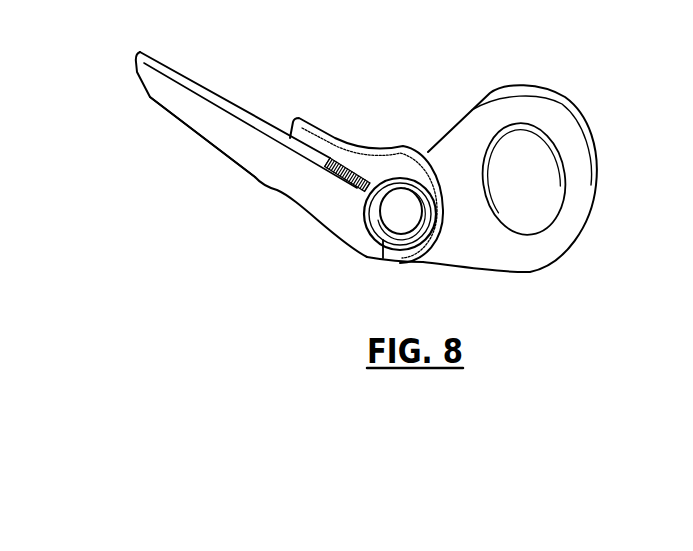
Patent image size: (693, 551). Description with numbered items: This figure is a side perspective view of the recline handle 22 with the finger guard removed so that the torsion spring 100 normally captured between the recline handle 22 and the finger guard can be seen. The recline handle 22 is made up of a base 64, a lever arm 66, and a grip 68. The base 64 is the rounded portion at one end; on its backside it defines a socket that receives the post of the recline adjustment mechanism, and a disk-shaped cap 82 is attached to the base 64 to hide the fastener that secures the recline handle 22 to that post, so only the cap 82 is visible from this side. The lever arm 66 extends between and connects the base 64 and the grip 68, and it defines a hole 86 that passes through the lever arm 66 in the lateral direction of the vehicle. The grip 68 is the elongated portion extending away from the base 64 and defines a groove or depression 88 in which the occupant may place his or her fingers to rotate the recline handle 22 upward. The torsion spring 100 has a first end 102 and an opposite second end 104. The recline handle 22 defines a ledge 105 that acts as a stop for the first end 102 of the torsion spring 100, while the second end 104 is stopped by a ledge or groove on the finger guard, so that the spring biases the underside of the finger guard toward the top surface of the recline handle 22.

The recline handle 22 is at (511, 43).
The base 64 is at (577, 117).
The lever arm 66 is at (394, 148).
The grip 68 is at (170, 72).
The cap 82 is at (523, 188).
The hole 86 is at (363, 212).
The groove or depression 88 is at (200, 113).
The torsion spring 100 is at (382, 158).
The first end 102 is at (422, 262).
The second end 104 is at (330, 158).
The ledge 105 is at (368, 256).